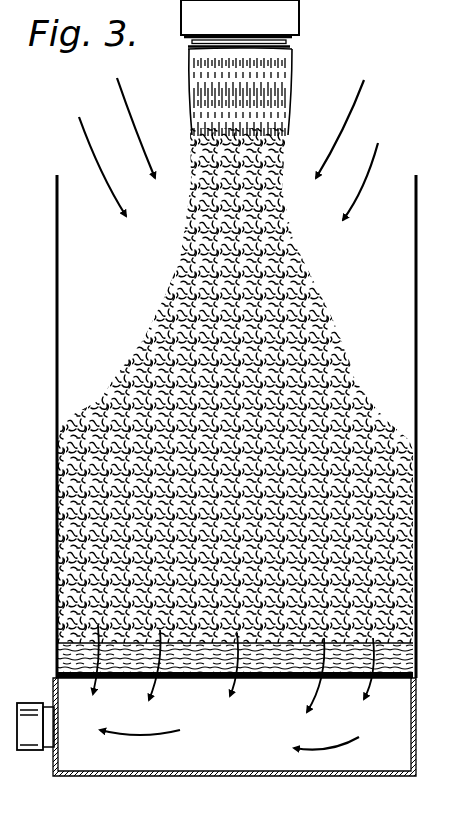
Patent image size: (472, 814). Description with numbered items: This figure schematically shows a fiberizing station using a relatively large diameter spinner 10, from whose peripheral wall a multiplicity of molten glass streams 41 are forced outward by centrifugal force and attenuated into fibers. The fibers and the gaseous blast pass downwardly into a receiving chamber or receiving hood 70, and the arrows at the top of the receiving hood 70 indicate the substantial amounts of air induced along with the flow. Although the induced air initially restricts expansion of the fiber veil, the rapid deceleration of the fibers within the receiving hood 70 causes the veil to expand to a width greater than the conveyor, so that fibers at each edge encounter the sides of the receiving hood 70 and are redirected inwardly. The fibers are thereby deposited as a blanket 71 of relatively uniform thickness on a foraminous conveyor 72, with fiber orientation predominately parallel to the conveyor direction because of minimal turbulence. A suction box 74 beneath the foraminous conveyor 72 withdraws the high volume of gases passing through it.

The spinner 10 is at (300, 40).
The molten glass streams 41 is at (294, 92).
The receiving chamber or receiving hood 70 is at (58, 267).
The blanket 71 is at (265, 660).
The foraminous conveyor 72 is at (181, 681).
The suction box 74 is at (238, 777).